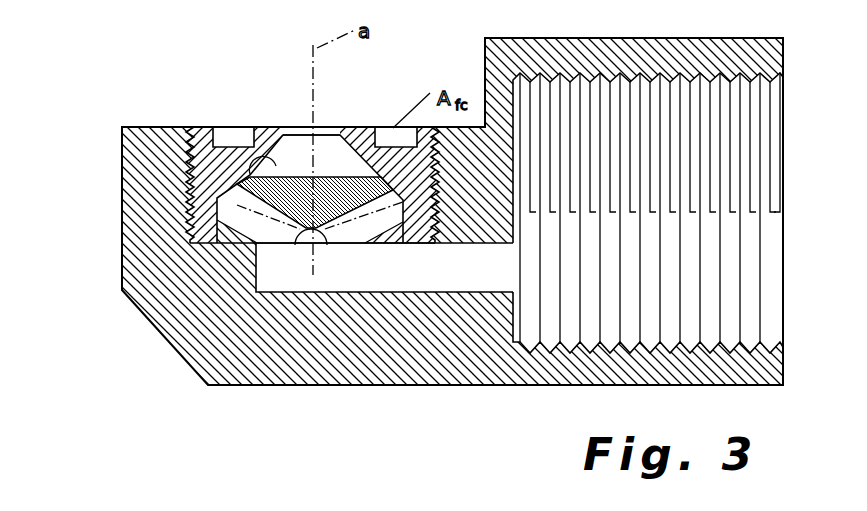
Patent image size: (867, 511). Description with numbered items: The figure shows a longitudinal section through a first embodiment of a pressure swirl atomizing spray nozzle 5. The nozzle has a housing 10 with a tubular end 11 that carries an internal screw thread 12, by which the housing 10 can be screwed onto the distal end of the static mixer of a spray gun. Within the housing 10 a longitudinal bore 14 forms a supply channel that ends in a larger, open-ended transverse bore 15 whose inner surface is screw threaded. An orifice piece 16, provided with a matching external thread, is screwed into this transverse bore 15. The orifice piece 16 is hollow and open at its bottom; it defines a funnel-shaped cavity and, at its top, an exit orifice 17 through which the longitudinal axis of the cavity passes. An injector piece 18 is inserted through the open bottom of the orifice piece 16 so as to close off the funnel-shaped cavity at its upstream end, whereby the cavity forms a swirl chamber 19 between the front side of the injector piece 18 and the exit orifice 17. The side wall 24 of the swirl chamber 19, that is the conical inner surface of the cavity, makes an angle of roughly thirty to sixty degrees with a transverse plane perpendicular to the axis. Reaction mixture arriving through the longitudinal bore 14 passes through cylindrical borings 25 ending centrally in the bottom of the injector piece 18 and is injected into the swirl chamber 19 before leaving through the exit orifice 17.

The spray nozzle 5 is at (294, 272).
The housing 10 is at (257, 360).
The tubular end 11 is at (745, 368).
The internal screw thread 12 is at (753, 330).
The longitudinal bore 14 is at (383, 278).
The transverse bore 15 is at (190, 157).
The orifice piece 16 is at (352, 143).
The exit orifice 17 is at (302, 133).
The injector piece 18 is at (298, 190).
The swirl chamber 19 is at (290, 160).
The side wall 24 is at (190, 130).
The cylindrical boring 25 is at (222, 248).